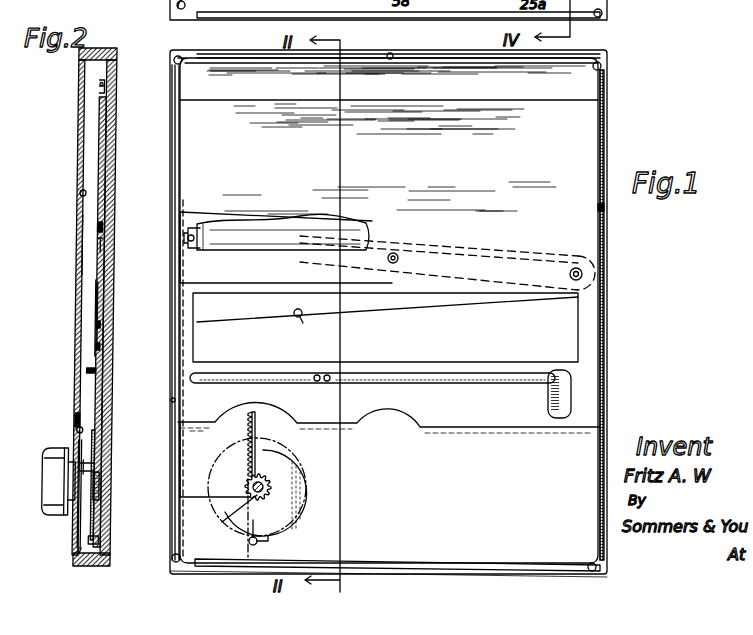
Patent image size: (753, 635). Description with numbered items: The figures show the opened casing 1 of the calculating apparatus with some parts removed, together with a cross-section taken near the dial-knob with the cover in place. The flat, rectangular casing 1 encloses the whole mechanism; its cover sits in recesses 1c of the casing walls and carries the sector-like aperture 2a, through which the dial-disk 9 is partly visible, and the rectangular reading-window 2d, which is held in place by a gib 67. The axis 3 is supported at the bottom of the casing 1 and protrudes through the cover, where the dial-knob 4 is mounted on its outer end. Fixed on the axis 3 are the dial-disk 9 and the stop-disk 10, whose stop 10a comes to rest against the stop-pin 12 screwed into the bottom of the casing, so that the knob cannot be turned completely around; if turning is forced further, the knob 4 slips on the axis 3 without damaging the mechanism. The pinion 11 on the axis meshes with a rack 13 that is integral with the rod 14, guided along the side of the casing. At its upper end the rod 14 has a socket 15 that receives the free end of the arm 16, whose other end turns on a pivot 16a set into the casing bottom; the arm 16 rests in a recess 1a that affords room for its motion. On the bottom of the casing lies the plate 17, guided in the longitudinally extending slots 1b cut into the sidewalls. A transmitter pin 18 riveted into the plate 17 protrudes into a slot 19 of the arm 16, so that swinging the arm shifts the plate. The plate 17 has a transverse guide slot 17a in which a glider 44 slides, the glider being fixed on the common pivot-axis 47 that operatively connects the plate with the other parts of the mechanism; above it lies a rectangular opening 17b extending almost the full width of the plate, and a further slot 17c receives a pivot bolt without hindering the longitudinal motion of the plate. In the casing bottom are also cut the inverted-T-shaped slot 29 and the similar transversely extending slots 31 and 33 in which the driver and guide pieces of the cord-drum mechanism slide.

In FIG. 2, the casing 1 is at (116, 66).
In FIG. 1, the casing 1 is at (585, 72).
In FIG. 2, the recess 1a is at (106, 234).
In FIG. 1, the recess 1a is at (308, 321).
In FIG. 1, the longitudinally extending slots 1b is at (180, 152).
In FIG. 2, the recesses of the casing-walls 1c is at (81, 50).
In FIG. 1, the recesses of the casing-walls 1c is at (470, 566).
In FIG. 2, the sector-like aperture 2a is at (81, 418).
In FIG. 2, the rectangular reading-window 2d is at (80, 243).
In FIG. 2, the axis 3 is at (102, 466).
In FIG. 1, the axis 3 is at (295, 498).
In FIG. 2, the dial-knob 4 is at (60, 450).
In FIG. 2, the dial-disk 9 is at (82, 430).
In FIG. 2, the stop-disk 10 is at (86, 520).
In FIG. 1, the stop-disk 10 is at (264, 493).
In FIG. 2, the stop 10a is at (83, 549).
In FIG. 1, the stop 10a is at (268, 541).
In FIG. 2, the pinion 11 is at (106, 484).
In FIG. 1, the pinion 11 is at (260, 478).
In FIG. 2, the stop-pin 12 is at (106, 540).
In FIG. 1, the stop-pin 12 is at (249, 542).
In FIG. 2, the rack 13 is at (102, 446).
In FIG. 1, the rack 13 is at (250, 430).
In FIG. 2, the rod 14 is at (108, 300).
In FIG. 1, the rod 14 is at (181, 273).
In FIG. 1, the socket 15 is at (197, 232).
In FIG. 2, the arm 16 is at (106, 250).
In FIG. 1, the arm 16 is at (325, 248).
In FIG. 1, the pivot 16a is at (574, 262).
In FIG. 2, the plate 17 is at (100, 130).
In FIG. 1, the plate 17 is at (490, 113).
In FIG. 1, the transverse guide slot 17a is at (462, 384).
In FIG. 2, the rectangular opening 17b is at (100, 300).
In FIG. 1, the rectangular opening 17b is at (519, 356).
In FIG. 1, the slot 17c is at (561, 420).
In FIG. 1, the transmitter pin 18 is at (393, 251).
In FIG. 1, the slot 19 is at (405, 260).
In FIG. 2, the slot 29 is at (108, 346).
In FIG. 2, the transversely extending slot 31 is at (108, 324).
In FIG. 2, the transversely extending slot 33 is at (106, 86).
In FIG. 2, the glider 44 is at (105, 371).
In FIG. 1, the glider 44 is at (331, 377).
In FIG. 2, the pivot-axis 47 is at (92, 370).
In FIG. 1, the pivot-axis 47 is at (317, 374).
In FIG. 2, the gib 67 is at (82, 192).